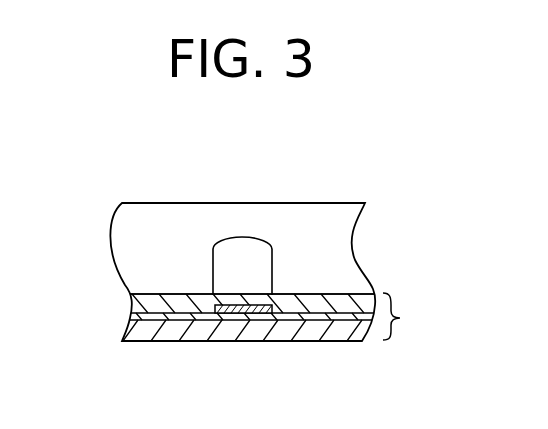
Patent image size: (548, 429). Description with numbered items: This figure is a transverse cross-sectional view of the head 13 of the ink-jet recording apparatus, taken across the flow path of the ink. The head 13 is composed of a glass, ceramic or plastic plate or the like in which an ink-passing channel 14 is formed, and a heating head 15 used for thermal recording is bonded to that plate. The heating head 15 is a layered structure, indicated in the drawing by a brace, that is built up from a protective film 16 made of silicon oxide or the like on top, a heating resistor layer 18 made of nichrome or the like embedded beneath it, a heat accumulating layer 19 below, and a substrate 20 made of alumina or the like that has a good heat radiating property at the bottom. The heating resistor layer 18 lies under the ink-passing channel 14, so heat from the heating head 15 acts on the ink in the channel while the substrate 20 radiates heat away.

The head 13 is at (135, 202).
The ink-passing channel 14 is at (258, 237).
The heating head 15 is at (281, 317).
The protective film 16 is at (317, 293).
The heating resistor layer 18 is at (233, 308).
The heat accumulating layer 19 is at (353, 312).
The substrate 20 is at (325, 333).